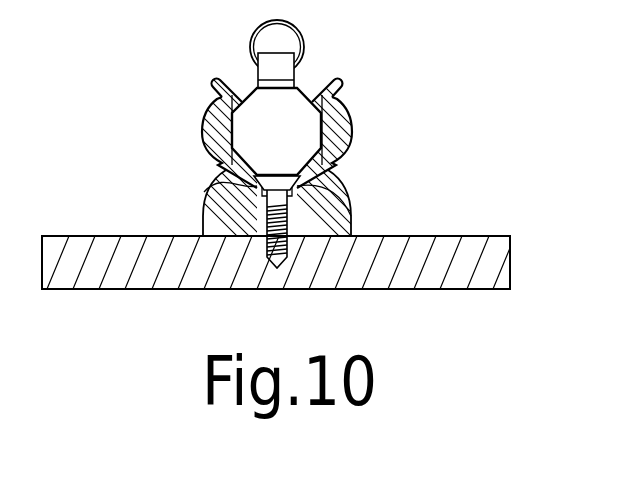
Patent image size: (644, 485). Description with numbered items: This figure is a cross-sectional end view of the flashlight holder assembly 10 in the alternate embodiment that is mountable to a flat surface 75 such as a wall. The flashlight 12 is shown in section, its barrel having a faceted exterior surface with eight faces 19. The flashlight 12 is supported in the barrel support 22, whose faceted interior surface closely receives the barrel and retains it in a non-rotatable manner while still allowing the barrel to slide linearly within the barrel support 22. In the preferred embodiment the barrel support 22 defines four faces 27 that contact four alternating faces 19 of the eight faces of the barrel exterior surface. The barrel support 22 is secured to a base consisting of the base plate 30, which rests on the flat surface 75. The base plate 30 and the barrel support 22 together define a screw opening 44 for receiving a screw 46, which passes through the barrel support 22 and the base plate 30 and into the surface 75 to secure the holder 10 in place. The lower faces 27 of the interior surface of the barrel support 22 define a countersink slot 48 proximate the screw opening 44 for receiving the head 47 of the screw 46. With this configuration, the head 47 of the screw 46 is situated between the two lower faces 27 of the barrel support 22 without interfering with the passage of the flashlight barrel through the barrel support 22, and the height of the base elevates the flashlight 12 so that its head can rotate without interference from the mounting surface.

The flashlight holder assembly 10 is at (495, 122).
The flashlight 12 is at (258, 98).
The faces 19 is at (309, 80).
The barrel support 22 is at (350, 140).
The faces 27 is at (325, 137).
The base plate 30 is at (210, 232).
The screw opening 44 is at (292, 252).
The screw 46 is at (347, 218).
The head 47 is at (347, 191).
The countersink slot 48 is at (257, 186).
The flat surface 75 is at (510, 257).